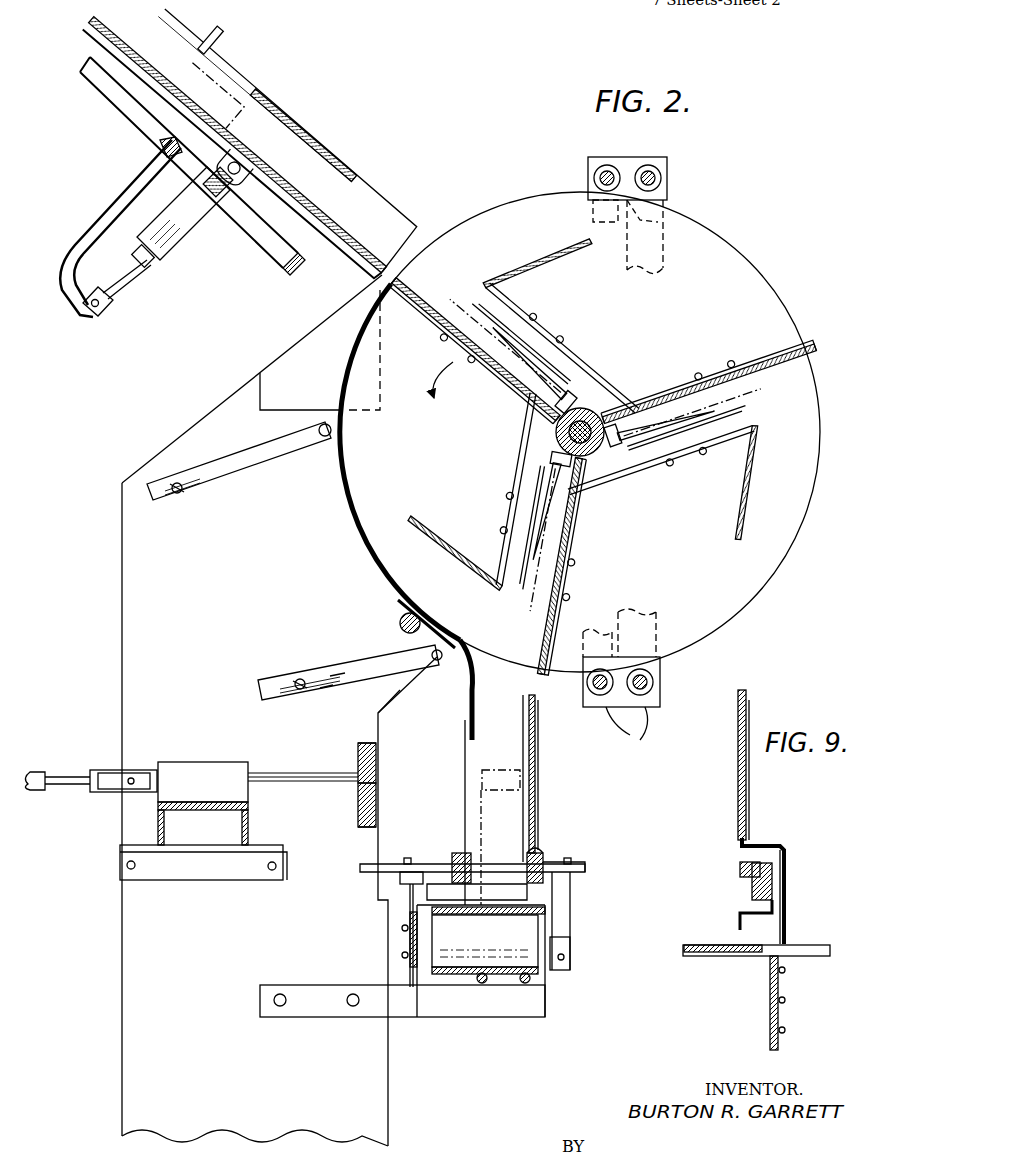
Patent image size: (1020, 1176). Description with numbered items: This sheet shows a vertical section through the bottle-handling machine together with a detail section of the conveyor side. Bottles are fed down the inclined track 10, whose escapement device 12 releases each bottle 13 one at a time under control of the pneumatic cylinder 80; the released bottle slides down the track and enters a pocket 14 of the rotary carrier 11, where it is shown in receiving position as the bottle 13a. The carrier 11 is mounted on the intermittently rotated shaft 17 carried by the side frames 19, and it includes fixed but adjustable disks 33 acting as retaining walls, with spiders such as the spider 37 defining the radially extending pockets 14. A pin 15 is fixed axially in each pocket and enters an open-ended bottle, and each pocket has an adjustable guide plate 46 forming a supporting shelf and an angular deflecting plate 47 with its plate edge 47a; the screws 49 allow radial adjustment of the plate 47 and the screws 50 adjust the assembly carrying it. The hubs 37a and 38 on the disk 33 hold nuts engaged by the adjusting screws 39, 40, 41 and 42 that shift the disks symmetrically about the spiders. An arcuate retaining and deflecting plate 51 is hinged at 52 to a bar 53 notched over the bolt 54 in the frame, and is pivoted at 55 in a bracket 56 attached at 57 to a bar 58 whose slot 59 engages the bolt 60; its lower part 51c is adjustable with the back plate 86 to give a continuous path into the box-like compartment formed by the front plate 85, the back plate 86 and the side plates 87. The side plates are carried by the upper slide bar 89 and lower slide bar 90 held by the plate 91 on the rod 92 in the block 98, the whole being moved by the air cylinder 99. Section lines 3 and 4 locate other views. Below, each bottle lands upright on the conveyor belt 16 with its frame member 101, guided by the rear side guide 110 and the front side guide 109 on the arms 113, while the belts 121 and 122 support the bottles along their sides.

In FIG. 2, the track 10 is at (274, 140).
In FIG. 2, the escapement device 12 is at (211, 40).
In FIG. 2, the bottle 13 is at (244, 140).
In FIG. 2, the bottle in receiving position 13a is at (511, 315).
In FIG. 2, the pneumatic cylinder 80 is at (192, 232).
In FIG. 2, the side frame 19 is at (196, 434).
In FIG. 2, the disk 33 is at (752, 272).
In FIG. 2, the arcuate retaining and deflecting plate 51 is at (352, 512).
In FIG. 2, the lower part of plate 51c is at (476, 696).
In FIG. 2, the rotary carrier 11 is at (734, 244).
In FIG. 2, the shaft 17 is at (596, 411).
In FIG. 2, the guide plate 46 is at (440, 325).
In FIG. 2, the deflecting plate 47 is at (537, 270).
In FIG. 2, the guide plate edge 47a is at (480, 294).
In FIG. 2, the pocket 14 is at (520, 340).
In FIG. 2, the pin 15 is at (530, 348).
In FIG. 2, the screw 49 is at (563, 349).
In FIG. 2, the screw 50 is at (489, 378).
In FIG. 2, the spider 37 is at (477, 370).
In FIG. 2, the hub 38 is at (646, 166).
In FIG. 2, the adjusting screw 39 is at (661, 179).
In FIG. 2, the adjusting screw 40 is at (594, 179).
In FIG. 2, the adjusting screw 41 is at (588, 684).
In FIG. 2, the adjusting screw 42 is at (655, 684).
In FIG. 2, the hub 37a is at (635, 729).
In FIG. 2, the bar 53 is at (250, 463).
In FIG. 2, the hinge 52 is at (323, 440).
In FIG. 2, the bolt 54 is at (178, 494).
In FIG. 2, the bar 58 is at (386, 670).
In FIG. 2, the pivot 57 is at (437, 662).
In FIG. 2, the bolt 60 is at (300, 690).
In FIG. 2, the slot 59 is at (331, 692).
In FIG. 2, the pivot 55 is at (401, 628).
In FIG. 2, the bracket 56 is at (398, 604).
In FIG. 2, the back plate 86 is at (446, 812).
In FIG. 2, the side plate 87 is at (517, 721).
In FIG. 2, the front plate 85 is at (535, 750).
In FIG. 9, the front plate 85 is at (737, 758).
In FIG. 2, the upper slide bar 89 is at (378, 759).
In FIG. 2, the lower slide bar 90 is at (378, 800).
In FIG. 2, the plate 91 is at (357, 752).
In FIG. 2, the rod 92 is at (314, 783).
In FIG. 2, the block 98 is at (194, 763).
In FIG. 2, the air cylinder 99 is at (40, 771).
In FIG. 2, the section line 3 is at (78, 726).
In FIG. 2, the section line 4 is at (522, 635).
In FIG. 2, the rear side guide 110 is at (432, 864).
In FIG. 2, the belt 121 is at (526, 858).
In FIG. 9, the belt 121 is at (743, 873).
In FIG. 2, the belt 122 is at (472, 879).
In FIG. 2, the front side guide 109 is at (552, 862).
In FIG. 9, the front side guide 109 is at (773, 878).
In FIG. 2, the arm 113 is at (565, 923).
In FIG. 2, the conveyor belt 16 is at (481, 961).
In FIG. 9, the conveyor belt 16 is at (718, 946).
In FIG. 2, the frame member 101 is at (405, 944).
In FIG. 9, the frame member 101 is at (752, 958).